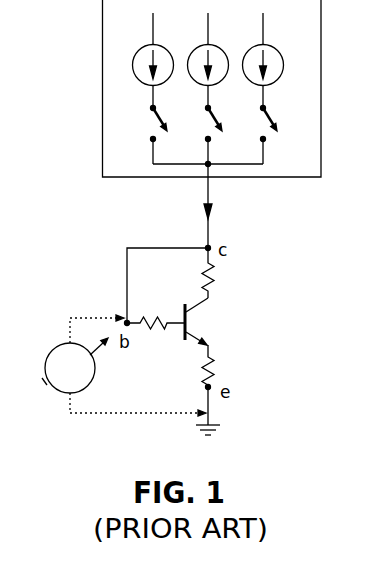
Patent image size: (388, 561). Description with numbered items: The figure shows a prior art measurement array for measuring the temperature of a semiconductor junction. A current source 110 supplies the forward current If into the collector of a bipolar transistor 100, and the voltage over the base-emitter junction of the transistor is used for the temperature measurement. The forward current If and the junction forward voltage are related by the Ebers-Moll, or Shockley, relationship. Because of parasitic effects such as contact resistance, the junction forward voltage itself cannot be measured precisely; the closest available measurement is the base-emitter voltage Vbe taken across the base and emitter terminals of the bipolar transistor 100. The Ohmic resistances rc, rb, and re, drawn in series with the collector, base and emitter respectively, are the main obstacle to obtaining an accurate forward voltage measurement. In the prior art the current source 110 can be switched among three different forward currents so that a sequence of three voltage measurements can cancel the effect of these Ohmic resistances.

The current source 110 is at (102, 143).
The bipolar transistor 100 is at (183, 333).
The forward current If is at (222, 206).
The collector Ohmic resistance rc is at (196, 273).
The base Ohmic resistance rb is at (156, 307).
The emitter Ohmic resistance re is at (196, 385).
The base-emitter voltage Vbe is at (124, 365).